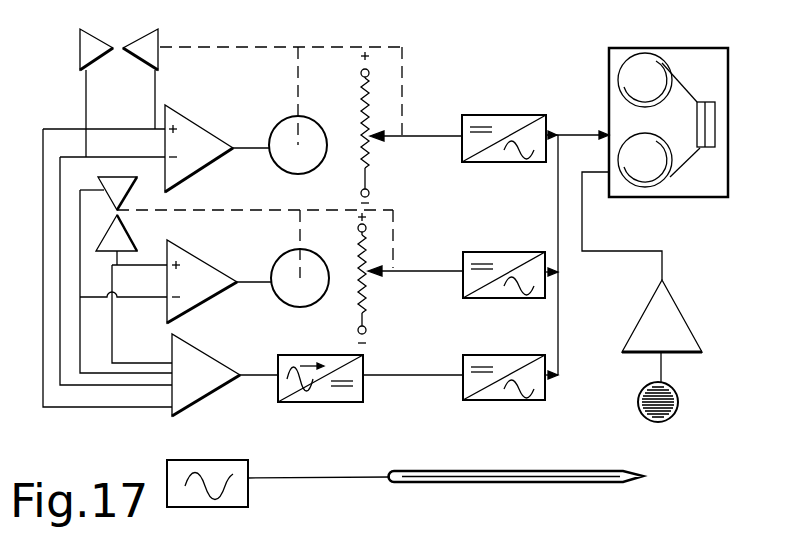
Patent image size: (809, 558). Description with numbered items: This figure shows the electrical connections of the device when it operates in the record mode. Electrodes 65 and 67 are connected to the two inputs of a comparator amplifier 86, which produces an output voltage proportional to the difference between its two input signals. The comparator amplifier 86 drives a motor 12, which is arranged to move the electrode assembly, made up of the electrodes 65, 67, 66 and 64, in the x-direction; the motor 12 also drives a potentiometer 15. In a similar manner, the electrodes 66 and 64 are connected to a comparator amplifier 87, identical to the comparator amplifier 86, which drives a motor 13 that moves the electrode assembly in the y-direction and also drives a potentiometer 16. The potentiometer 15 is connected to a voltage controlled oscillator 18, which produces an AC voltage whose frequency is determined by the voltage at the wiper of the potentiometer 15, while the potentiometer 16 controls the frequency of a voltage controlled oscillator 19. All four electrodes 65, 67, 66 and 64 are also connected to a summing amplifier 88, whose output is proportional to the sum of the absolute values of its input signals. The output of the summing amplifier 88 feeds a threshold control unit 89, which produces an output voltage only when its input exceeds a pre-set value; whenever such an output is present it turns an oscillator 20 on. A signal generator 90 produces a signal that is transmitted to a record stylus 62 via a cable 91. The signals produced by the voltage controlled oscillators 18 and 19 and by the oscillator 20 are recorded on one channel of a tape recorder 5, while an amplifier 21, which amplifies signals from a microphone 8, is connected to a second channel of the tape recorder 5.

The tape recorder 5 is at (675, 198).
The microphone 8 is at (672, 416).
The motor 12 is at (306, 116).
The motor 13 is at (311, 253).
The potentiometer 15 is at (370, 142).
The potentiometer 16 is at (367, 280).
The voltage controlled oscillator 18 is at (494, 114).
The voltage controlled oscillator 19 is at (490, 252).
The oscillator 20 is at (477, 355).
The amplifier 21 is at (680, 310).
The record stylus 62 is at (518, 471).
The electrode 64 is at (127, 232).
The electrode 65 is at (79, 37).
The electrode 66 is at (129, 190).
The electrode 67 is at (159, 54).
The comparator amplifier 86 is at (205, 128).
The comparator amplifier 87 is at (197, 258).
The summing amplifier 88 is at (197, 349).
The threshold control unit 89 is at (306, 402).
The signal generator 90 is at (205, 460).
The cable 91 is at (308, 477).